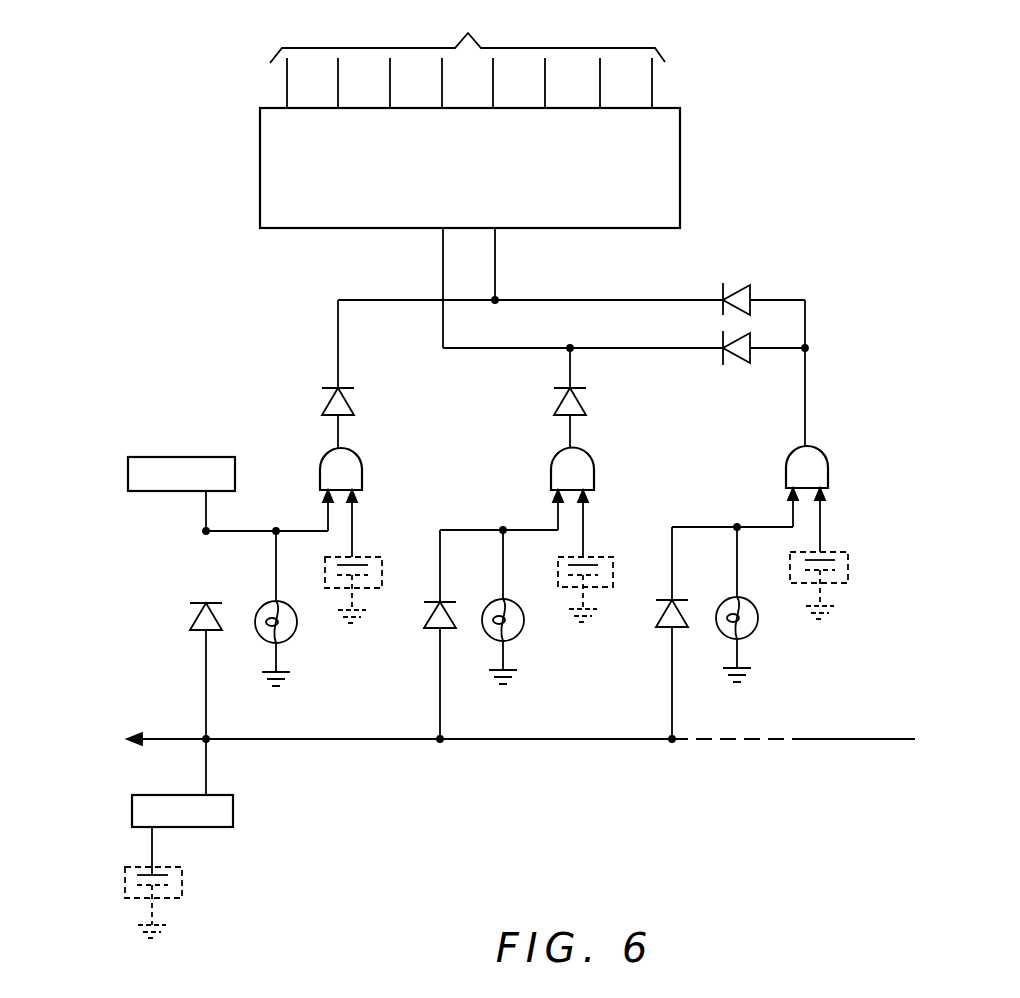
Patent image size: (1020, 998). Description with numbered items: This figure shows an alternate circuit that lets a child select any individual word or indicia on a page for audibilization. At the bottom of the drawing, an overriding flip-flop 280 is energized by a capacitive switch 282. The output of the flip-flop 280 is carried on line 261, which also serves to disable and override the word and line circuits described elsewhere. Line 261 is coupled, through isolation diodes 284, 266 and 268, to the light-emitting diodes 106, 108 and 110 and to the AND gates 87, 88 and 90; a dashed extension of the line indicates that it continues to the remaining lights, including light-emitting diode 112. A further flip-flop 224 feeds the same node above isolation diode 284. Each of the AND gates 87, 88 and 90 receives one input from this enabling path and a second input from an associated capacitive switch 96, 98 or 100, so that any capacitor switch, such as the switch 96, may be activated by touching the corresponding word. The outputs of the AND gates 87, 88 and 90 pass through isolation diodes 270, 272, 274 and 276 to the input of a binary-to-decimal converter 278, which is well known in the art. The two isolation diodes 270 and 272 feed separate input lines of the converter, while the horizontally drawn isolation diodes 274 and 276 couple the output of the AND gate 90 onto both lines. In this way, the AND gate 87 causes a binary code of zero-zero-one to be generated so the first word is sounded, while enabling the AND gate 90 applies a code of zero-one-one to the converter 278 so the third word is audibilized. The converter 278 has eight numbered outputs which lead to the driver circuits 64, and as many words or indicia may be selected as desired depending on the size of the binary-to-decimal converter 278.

The driver circuits 64 is at (469, 55).
The binary-to-decimal converter 278 is at (681, 172).
The isolation diode 276 is at (750, 291).
The isolation diode 274 is at (738, 363).
The isolation diode 270 is at (355, 398).
The isolation diode 272 is at (588, 400).
The AND gate 87 is at (362, 470).
The AND gate 88 is at (594, 470).
The AND gate 90 is at (828, 468).
The flip-flop 224 is at (186, 456).
The capacitive switch 96 is at (380, 557).
The capacitive switch 98 is at (611, 557).
The capacitive switch 100 is at (848, 552).
The isolation diode 284 is at (192, 613).
The isolation diode 266 is at (432, 630).
The isolation diode 268 is at (662, 630).
The light-emitting diode 106 is at (295, 632).
The light-emitting diode 108 is at (522, 630).
The light-emitting diode 110 is at (756, 628).
The line 261 is at (248, 742).
The light-emitting diode 112 is at (793, 740).
The overriding flip-flop 280 is at (233, 808).
The capacitive switch 282 is at (182, 890).